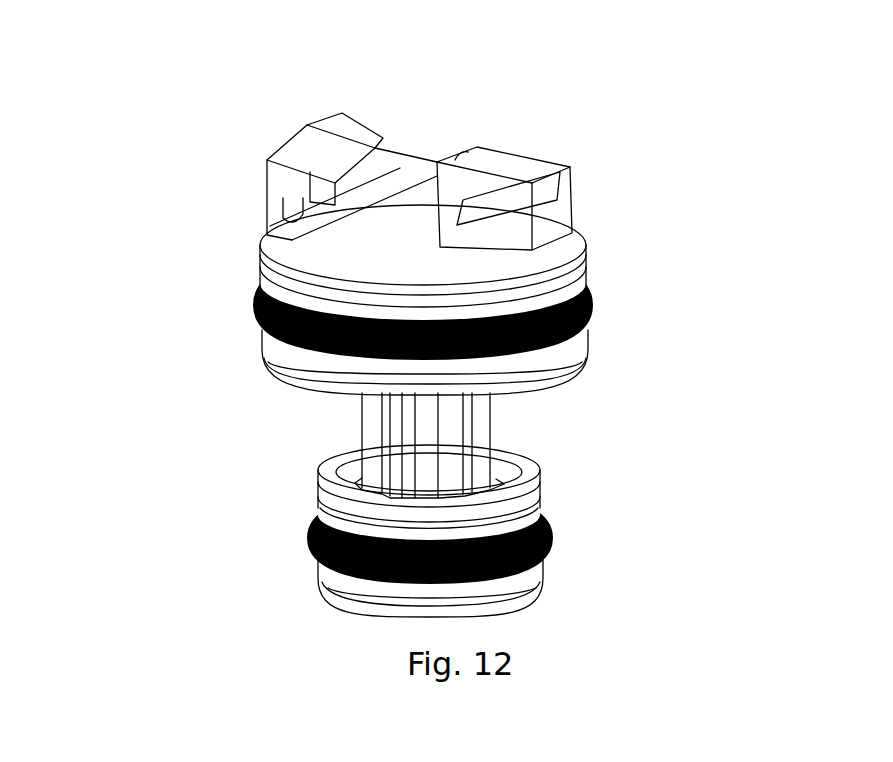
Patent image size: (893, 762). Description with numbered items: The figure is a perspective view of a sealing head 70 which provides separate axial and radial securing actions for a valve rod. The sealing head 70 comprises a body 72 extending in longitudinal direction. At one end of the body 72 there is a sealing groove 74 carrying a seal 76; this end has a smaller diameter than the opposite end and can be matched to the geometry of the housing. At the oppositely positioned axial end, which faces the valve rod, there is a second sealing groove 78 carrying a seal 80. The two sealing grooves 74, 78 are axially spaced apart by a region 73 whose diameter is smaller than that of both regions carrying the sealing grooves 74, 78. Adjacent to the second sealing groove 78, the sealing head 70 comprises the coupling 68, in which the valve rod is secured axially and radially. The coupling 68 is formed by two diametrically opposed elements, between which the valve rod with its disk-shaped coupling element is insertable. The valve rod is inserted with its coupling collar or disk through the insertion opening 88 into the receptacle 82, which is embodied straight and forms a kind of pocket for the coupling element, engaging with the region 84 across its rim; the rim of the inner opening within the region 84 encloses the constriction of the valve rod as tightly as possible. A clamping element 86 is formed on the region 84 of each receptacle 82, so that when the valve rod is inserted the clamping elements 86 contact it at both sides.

The sealing head 70 is at (203, 118).
The coupling 68 is at (575, 187).
The region 84 is at (302, 212).
The clamping element 86 is at (375, 147).
The receptacle 82 is at (349, 232).
The insertion opening 88 is at (351, 258).
The sealing groove 78 is at (570, 330).
The seal 80 is at (330, 347).
The body 72 is at (460, 442).
The region 73 is at (362, 440).
The seal 76 is at (307, 533).
The sealing groove 74 is at (543, 560).